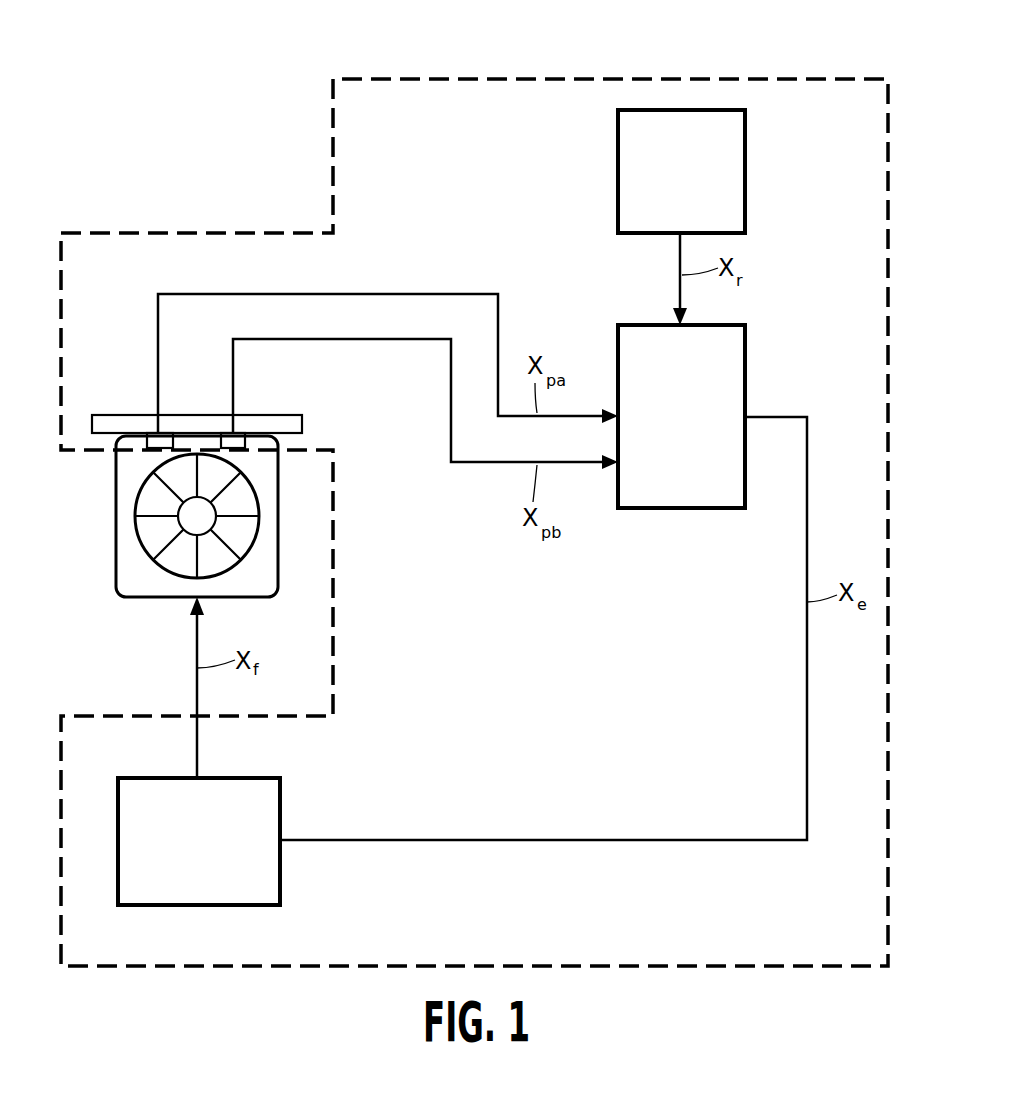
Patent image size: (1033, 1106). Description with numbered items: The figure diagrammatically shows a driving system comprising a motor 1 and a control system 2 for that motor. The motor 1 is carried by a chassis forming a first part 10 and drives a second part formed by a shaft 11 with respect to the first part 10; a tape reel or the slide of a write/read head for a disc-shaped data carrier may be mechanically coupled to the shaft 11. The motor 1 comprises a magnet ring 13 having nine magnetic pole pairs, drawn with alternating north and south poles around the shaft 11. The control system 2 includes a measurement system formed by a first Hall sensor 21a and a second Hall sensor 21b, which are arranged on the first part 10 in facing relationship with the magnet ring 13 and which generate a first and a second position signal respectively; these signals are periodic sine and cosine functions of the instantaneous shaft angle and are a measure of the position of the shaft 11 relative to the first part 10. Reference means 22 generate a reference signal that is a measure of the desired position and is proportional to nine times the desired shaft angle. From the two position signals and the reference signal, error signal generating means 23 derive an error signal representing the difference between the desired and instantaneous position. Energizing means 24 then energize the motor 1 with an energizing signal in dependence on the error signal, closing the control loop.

The motor 1 is at (278, 570).
The control system 2 is at (223, 967).
The first part 10 is at (287, 427).
The shaft 11 is at (203, 521).
The magnet ring 13 is at (150, 543).
The first Hall sensor 21a is at (160, 442).
The second Hall sensor 21b is at (233, 442).
The reference means 22 is at (747, 202).
The error signal generating means 23 is at (747, 362).
The energizing means 24 is at (280, 803).